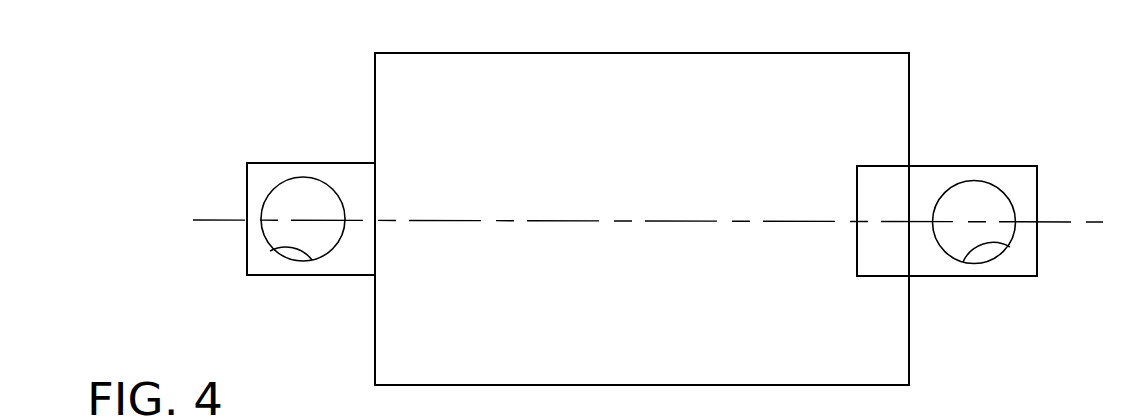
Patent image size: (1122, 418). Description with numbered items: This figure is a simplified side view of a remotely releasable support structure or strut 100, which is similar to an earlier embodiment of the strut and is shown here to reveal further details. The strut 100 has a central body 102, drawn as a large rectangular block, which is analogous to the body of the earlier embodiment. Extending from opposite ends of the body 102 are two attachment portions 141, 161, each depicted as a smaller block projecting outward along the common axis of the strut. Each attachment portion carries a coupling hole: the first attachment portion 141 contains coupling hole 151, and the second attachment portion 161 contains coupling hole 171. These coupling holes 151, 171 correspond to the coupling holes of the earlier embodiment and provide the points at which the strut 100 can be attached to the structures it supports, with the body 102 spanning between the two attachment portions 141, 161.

The support strut 100 is at (185, 98).
The body 102 is at (625, 172).
The attachment portion 141 is at (292, 167).
The coupling hole 151 is at (270, 251).
The attachment portion 161 is at (960, 173).
The coupling hole 171 is at (1003, 247).